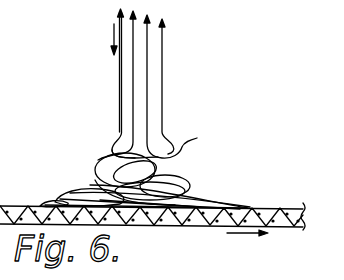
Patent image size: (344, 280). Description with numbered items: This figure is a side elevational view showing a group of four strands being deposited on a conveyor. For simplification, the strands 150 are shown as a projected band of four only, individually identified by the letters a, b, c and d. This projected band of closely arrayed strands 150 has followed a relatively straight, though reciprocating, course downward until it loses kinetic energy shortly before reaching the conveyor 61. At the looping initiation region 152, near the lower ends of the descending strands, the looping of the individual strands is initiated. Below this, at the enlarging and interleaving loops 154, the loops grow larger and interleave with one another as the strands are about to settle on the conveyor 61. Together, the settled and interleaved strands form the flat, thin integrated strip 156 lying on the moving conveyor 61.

The strands 150 is at (122, 38).
The looping initiation region 152 is at (182, 147).
The enlarging and interleaving loops 154 is at (205, 193).
The flat thin integrated strip 156 is at (125, 208).
The conveyor 61 is at (215, 228).